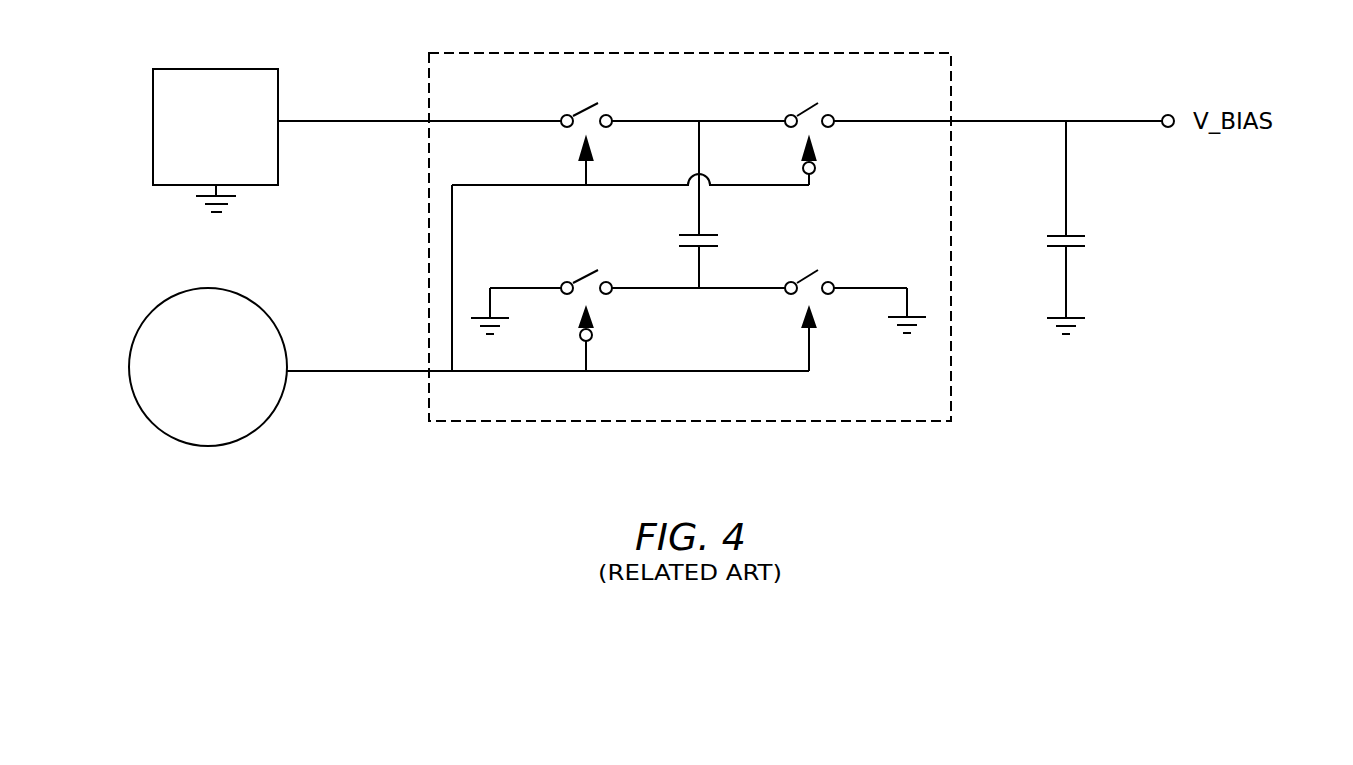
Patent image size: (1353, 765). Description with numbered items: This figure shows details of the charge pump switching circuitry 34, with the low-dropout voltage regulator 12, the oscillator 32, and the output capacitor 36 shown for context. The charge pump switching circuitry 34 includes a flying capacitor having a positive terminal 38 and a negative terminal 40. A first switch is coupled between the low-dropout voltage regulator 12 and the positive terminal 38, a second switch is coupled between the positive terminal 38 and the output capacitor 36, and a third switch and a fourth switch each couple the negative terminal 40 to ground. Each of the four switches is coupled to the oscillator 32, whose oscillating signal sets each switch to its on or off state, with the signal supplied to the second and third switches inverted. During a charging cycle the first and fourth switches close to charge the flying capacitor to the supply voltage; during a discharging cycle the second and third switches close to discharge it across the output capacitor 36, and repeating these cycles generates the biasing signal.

The low-dropout voltage regulator 12 is at (215, 140).
The oscillator 32 is at (469, 367).
The charge pump switching circuitry 34 is at (690, 237).
The output capacitor 36 is at (1093, 239).
The positive terminal 38 is at (699, 113).
The negative terminal 40 is at (699, 295).